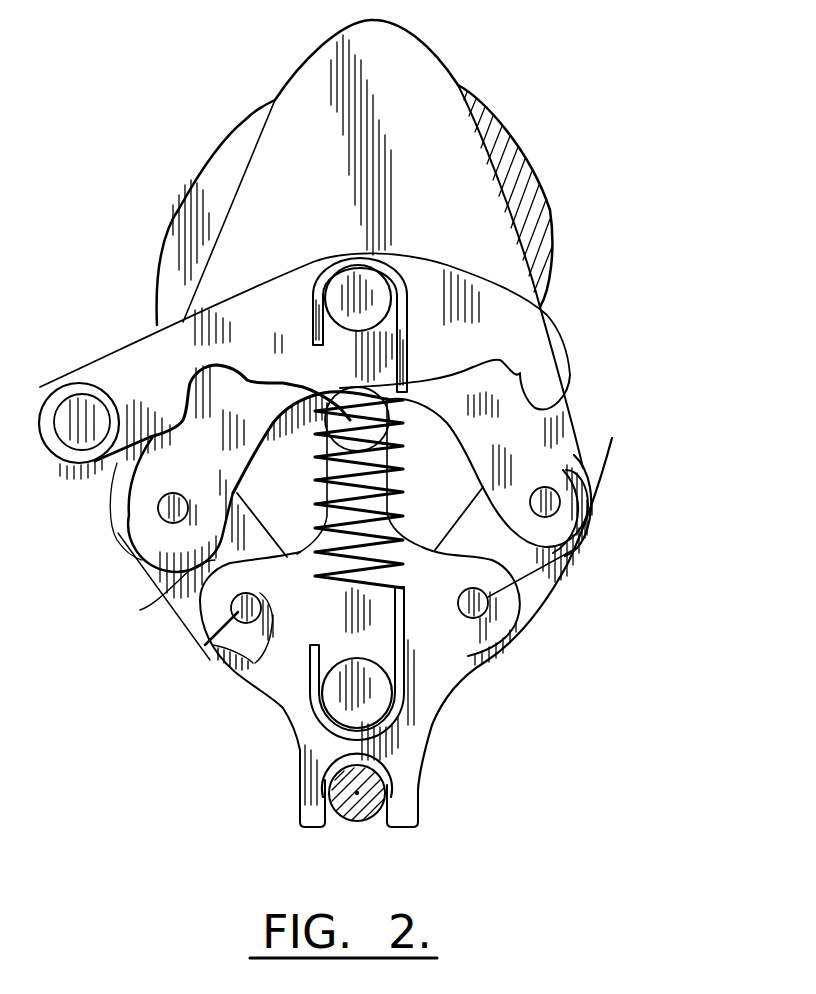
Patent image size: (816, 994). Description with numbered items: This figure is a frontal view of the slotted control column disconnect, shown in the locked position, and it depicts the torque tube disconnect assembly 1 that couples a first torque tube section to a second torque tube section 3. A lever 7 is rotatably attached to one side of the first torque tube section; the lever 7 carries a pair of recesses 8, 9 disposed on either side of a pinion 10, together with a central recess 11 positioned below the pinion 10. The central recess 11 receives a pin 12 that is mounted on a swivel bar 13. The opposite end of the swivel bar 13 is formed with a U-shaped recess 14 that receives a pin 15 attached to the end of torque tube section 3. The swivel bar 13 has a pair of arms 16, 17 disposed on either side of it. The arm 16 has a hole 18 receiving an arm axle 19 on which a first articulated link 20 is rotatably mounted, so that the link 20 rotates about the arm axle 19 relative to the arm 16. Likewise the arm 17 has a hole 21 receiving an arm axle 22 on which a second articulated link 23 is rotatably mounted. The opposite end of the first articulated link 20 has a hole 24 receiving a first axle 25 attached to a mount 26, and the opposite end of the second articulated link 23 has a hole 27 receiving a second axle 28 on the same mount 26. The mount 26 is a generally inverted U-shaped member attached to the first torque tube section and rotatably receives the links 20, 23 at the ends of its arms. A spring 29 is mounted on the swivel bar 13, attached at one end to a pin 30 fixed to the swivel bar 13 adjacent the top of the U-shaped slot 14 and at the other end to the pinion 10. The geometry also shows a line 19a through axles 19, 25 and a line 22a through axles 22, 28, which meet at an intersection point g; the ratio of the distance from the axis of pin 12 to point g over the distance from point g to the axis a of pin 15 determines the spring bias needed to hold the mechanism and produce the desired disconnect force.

The disconnect assembly 1 is at (535, 338).
The torque tube section 3 is at (157, 278).
The lever 7 is at (466, 268).
The recess 8 is at (190, 377).
The recess 9 is at (522, 370).
The pinion 10 is at (370, 275).
The central recess 11 is at (353, 378).
The pin 12 is at (385, 395).
The swivel bar 13 is at (405, 538).
The U-shaped recess 14 is at (423, 742).
The pin 15 is at (386, 790).
The arm 16 is at (217, 663).
The arm 17 is at (490, 602).
The hole 18 is at (205, 648).
The arm axle 19 is at (253, 667).
The line 19a is at (152, 593).
The first articulated link 20 is at (163, 607).
The hole 21 is at (587, 552).
The arm axle 22 is at (522, 640).
The line 22a is at (455, 670).
The second articulated link 23 is at (605, 495).
The hole 24 is at (150, 552).
The first axle 25 is at (160, 519).
The mount 26 is at (218, 160).
The hole 27 is at (565, 498).
The second axle 28 is at (577, 484).
The spring 29 is at (400, 467).
The pin 30 is at (335, 702).
The axis of pin 15 a is at (388, 803).
The intersection point g is at (357, 752).